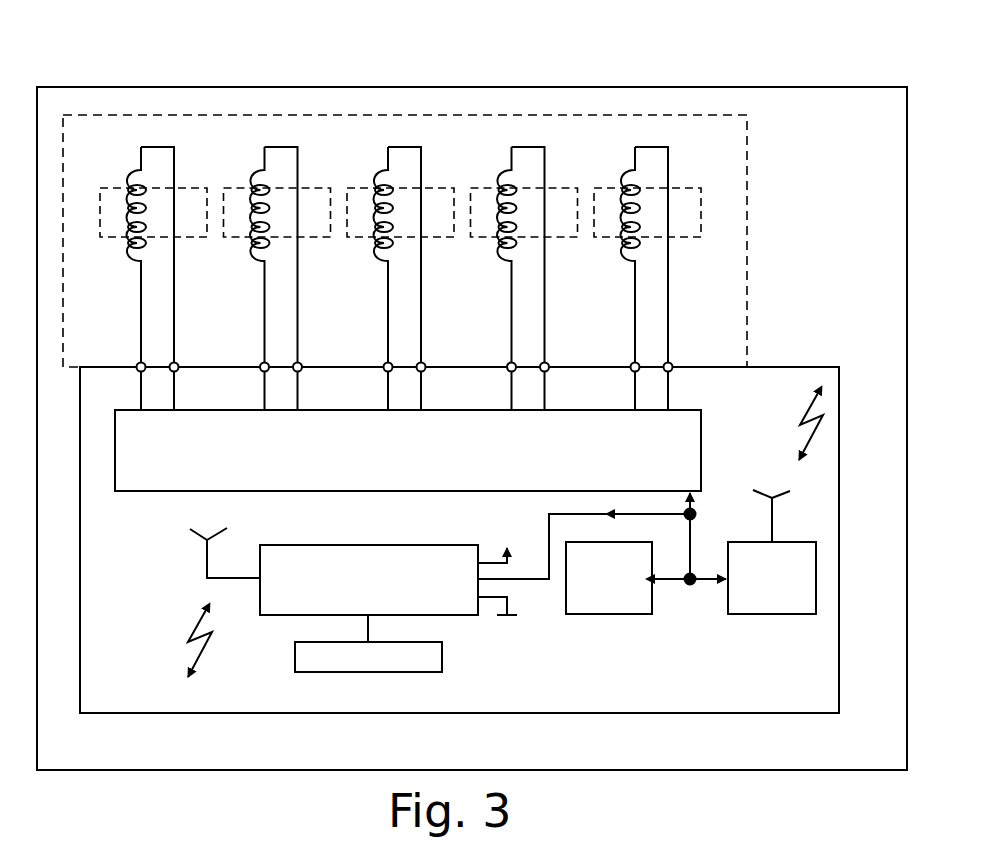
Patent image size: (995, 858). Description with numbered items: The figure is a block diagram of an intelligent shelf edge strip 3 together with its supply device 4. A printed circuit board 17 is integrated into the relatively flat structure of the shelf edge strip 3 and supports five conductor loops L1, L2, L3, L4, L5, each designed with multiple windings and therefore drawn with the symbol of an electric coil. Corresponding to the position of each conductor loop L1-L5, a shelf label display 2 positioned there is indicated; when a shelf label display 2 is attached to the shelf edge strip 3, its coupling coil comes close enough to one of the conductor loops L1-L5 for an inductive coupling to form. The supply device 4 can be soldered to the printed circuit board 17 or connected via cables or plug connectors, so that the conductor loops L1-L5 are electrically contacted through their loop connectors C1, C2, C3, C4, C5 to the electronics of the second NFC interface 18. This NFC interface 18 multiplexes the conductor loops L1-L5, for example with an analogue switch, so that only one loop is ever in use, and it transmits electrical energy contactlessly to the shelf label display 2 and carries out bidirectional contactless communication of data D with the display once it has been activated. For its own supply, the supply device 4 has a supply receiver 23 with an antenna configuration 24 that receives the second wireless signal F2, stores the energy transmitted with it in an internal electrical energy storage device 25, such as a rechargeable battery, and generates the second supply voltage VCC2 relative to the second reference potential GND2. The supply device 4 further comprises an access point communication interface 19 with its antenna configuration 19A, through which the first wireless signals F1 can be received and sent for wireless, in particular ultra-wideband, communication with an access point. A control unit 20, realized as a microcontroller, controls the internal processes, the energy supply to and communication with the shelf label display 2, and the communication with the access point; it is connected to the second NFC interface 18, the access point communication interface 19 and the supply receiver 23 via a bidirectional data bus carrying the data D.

The shelf edge strip 3 is at (863, 85).
The printed circuit board 17 is at (750, 163).
The shelf label display 2 is at (110, 187).
The supply device 4 is at (804, 365).
The second NFC interface 18 is at (704, 433).
The conductor loop L1 is at (124, 266).
The conductor loop L2 is at (248, 266).
The conductor loop L3 is at (371, 266).
The conductor loop L4 is at (494, 266).
The conductor loop L5 is at (618, 266).
The loop connector C1 is at (176, 363).
The loop connector C2 is at (300, 363).
The loop connector C3 is at (423, 363).
The loop connector C4 is at (546, 363).
The loop connector C5 is at (670, 363).
The supply receiver 23 is at (348, 563).
The electrical energy storage device 25 is at (428, 657).
The antenna configuration 24 is at (207, 565).
The second wireless signal F2 is at (196, 656).
The second supply voltage VCC2 is at (503, 537).
The second reference potential GND2 is at (507, 621).
The data D is at (693, 540).
The control unit 20 is at (602, 596).
The access point communication interface 19 is at (767, 595).
The antenna configuration 19A is at (775, 508).
The first wireless signals F1 is at (807, 440).